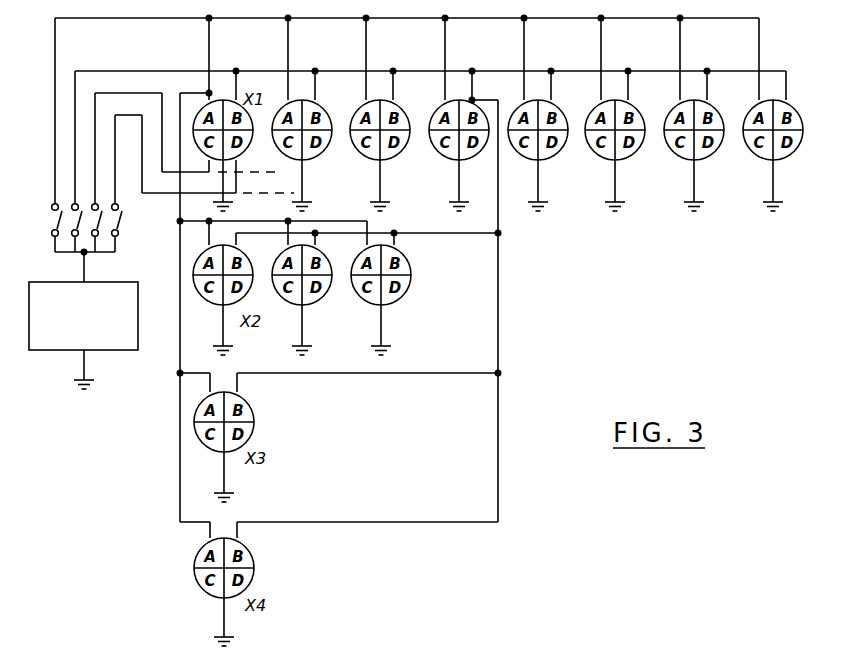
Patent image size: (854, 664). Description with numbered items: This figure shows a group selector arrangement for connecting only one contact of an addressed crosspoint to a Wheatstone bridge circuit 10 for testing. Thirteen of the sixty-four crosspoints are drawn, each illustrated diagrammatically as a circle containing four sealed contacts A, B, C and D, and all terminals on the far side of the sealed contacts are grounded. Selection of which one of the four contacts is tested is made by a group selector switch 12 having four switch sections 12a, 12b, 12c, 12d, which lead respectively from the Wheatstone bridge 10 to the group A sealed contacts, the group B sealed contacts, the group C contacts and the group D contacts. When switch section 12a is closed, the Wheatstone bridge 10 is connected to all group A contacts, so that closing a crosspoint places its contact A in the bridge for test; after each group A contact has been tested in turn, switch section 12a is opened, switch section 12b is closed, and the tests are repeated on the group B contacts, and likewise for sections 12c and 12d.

The Wheatstone bridge circuit 10 is at (118, 350).
The group selector switch 12 is at (93, 229).
The switch section 12a is at (50, 224).
The switch section 12b is at (58, 203).
The switch section 12c is at (100, 204).
The switch section 12d is at (122, 224).